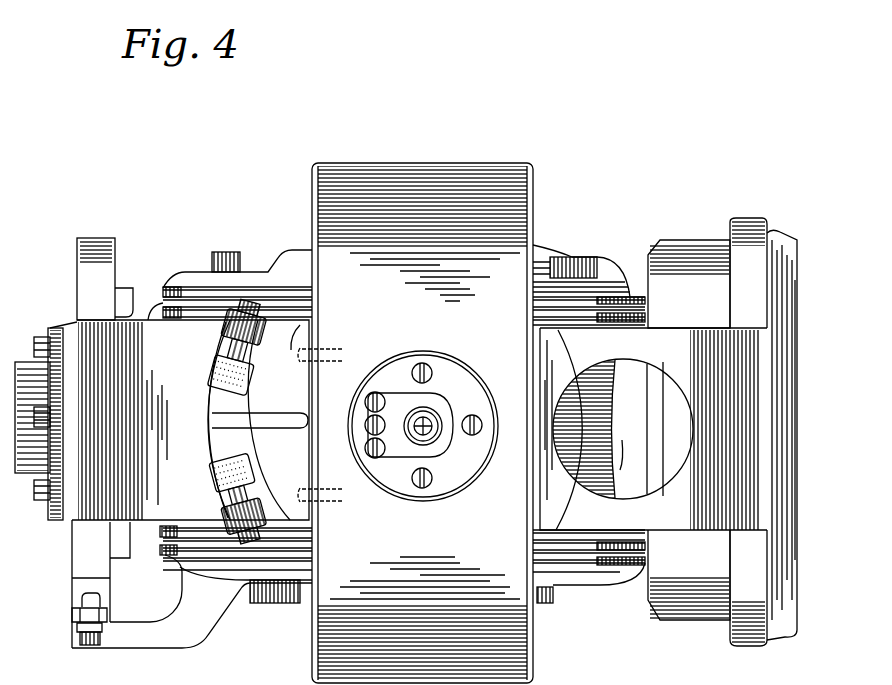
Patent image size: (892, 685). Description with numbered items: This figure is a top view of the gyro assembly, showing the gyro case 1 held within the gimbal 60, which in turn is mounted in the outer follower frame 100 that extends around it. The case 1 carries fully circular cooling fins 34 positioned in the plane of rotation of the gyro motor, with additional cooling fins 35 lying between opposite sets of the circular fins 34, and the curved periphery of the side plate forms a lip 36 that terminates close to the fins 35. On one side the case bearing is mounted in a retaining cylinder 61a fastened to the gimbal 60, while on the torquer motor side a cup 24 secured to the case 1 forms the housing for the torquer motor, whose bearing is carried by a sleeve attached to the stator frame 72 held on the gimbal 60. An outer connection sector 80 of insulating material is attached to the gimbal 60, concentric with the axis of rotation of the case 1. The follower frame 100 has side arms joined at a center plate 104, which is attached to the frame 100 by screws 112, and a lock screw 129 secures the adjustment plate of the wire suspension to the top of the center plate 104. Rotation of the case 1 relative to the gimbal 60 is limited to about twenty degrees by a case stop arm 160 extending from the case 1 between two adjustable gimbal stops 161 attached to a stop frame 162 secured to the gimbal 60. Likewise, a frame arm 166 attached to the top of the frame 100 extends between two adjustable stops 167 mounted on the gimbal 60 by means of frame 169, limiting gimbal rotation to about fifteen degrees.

The case 1 is at (583, 292).
The cup 24 is at (703, 312).
The cooling fins 34 is at (172, 290).
The additional cooling fins 35 is at (620, 390).
The lip 36 is at (646, 481).
The gimbal 60 is at (197, 430).
The retaining cylinder 61a is at (32, 380).
The stator frame 72 is at (758, 301).
The outer connection sector 80 is at (127, 297).
The follower frame 100 is at (446, 339).
The center plate 104 is at (441, 383).
The screws 112 is at (482, 427).
The lock screw 129 is at (377, 447).
The case stop arm 160 is at (192, 640).
The adjustable gimbal stops 161 is at (86, 648).
The stop frame 162 is at (88, 546).
The frame arm 166 is at (262, 425).
The adjustable stops 167 is at (233, 376).
The frame 169 is at (231, 443).